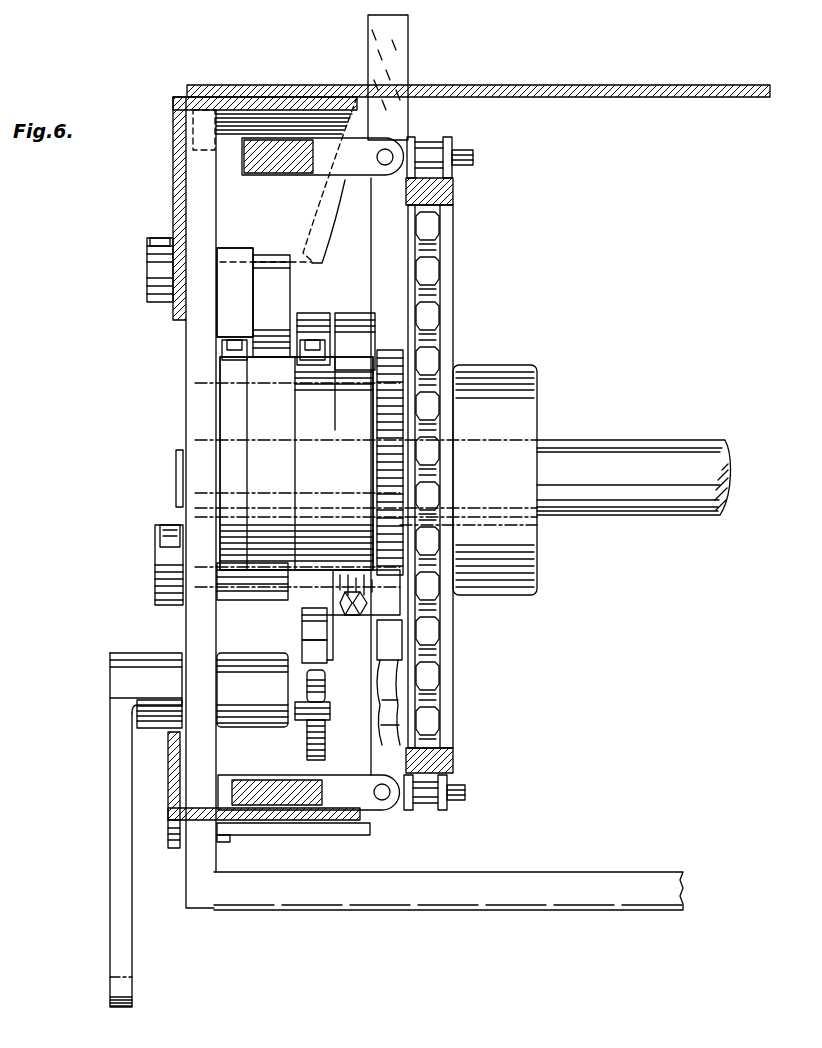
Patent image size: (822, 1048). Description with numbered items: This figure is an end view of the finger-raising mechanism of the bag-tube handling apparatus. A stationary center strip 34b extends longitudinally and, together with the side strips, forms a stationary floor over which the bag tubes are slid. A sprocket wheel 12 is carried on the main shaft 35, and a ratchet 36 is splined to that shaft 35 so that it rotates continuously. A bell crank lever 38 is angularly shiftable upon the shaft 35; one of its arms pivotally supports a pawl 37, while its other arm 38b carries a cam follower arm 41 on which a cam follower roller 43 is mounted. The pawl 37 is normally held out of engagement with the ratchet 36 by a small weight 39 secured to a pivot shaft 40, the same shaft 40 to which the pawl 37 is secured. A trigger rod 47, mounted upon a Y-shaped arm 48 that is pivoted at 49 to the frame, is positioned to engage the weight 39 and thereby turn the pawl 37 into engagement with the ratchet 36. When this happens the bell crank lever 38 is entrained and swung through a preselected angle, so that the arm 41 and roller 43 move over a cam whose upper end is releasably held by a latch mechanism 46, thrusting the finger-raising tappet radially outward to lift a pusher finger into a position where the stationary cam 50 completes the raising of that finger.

The sprocket wheel 12 is at (450, 733).
The stationary center strip 34b is at (548, 97).
The main shaft 35 is at (632, 440).
The ratchet 36 is at (388, 495).
The pawl 37 is at (345, 583).
The bell crank lever 38 is at (383, 662).
The arm of the bell crank lever 38b is at (358, 300).
The small weight 39 is at (315, 626).
The pivot shaft 40 is at (305, 639).
The cam follower arm 41 is at (318, 300).
The cam follower roller 43 is at (278, 475).
The latch mechanism 46 is at (272, 273).
The trigger rod 47 is at (324, 690).
The Y-shaped arm 48 is at (110, 930).
The pivot 49 is at (110, 660).
The stationary cam 50 is at (315, 215).